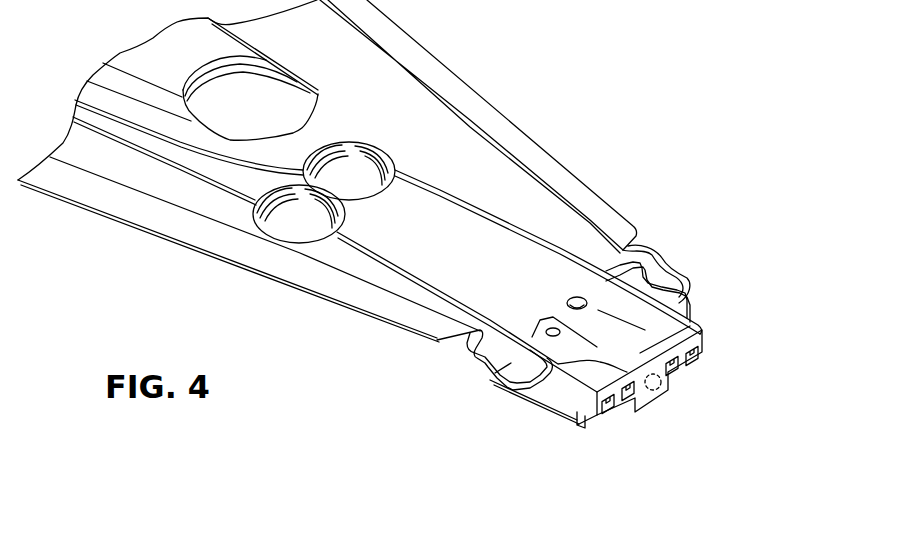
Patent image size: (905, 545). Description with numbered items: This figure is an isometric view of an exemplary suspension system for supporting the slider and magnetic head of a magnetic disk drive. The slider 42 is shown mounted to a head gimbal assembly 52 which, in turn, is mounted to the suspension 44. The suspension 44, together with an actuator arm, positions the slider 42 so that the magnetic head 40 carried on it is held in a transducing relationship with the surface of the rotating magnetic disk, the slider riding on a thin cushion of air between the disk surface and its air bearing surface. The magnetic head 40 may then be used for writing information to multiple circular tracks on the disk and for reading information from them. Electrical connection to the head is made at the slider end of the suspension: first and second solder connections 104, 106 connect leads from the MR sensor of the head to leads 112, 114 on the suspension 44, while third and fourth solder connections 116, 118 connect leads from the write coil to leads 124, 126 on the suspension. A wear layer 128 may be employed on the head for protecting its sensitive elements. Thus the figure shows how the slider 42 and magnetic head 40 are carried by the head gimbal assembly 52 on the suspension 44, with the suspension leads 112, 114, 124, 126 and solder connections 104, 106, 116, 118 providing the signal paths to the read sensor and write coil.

The magnetic head 40 is at (665, 398).
The slider 42 is at (533, 402).
The suspension 44 is at (504, 97).
The head gimbal assembly 52 is at (600, 331).
The first solder connection 104 is at (580, 410).
The second solder connection 106 is at (696, 351).
The lead 112 is at (367, 252).
The lead 114 is at (550, 238).
The third solder connection 116 is at (630, 398).
The fourth solder connection 118 is at (674, 364).
The lead 124 is at (417, 270).
The lead 126 is at (472, 206).
The wear layer 128 is at (557, 413).